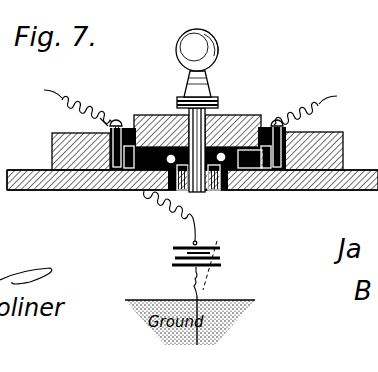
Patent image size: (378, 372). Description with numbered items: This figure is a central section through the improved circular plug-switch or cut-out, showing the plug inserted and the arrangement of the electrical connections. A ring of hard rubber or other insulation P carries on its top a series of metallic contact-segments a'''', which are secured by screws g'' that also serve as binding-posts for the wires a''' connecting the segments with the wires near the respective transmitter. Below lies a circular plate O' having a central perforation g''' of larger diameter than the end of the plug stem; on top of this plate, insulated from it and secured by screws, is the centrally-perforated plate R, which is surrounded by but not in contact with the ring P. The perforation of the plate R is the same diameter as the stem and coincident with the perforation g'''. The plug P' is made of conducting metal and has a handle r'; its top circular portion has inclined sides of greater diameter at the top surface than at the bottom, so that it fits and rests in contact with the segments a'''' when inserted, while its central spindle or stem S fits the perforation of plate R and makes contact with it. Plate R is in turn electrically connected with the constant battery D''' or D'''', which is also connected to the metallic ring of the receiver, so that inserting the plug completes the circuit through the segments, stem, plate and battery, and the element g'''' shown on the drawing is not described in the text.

The wires a''' is at (186, 105).
The metallic contact-segments a'''' is at (188, 109).
The screws g'' is at (209, 130).
The central perforation g''' is at (219, 182).
The contact g'''' is at (182, 181).
The handle r' is at (206, 50).
The plug P' is at (197, 114).
The ring of insulation P is at (189, 148).
The circular plate O' is at (192, 193).
The central spindle or stem S is at (197, 193).
The centrally-perforated plate R is at (246, 168).
The constant battery D''' is at (228, 243).
The constant battery D'''' is at (228, 243).